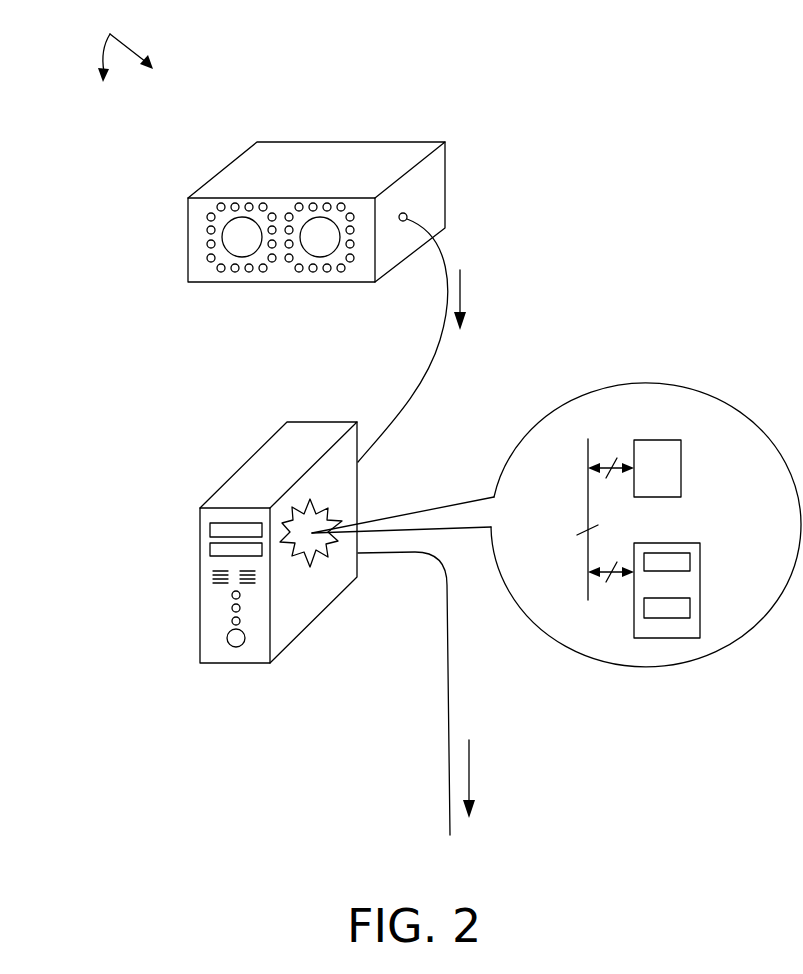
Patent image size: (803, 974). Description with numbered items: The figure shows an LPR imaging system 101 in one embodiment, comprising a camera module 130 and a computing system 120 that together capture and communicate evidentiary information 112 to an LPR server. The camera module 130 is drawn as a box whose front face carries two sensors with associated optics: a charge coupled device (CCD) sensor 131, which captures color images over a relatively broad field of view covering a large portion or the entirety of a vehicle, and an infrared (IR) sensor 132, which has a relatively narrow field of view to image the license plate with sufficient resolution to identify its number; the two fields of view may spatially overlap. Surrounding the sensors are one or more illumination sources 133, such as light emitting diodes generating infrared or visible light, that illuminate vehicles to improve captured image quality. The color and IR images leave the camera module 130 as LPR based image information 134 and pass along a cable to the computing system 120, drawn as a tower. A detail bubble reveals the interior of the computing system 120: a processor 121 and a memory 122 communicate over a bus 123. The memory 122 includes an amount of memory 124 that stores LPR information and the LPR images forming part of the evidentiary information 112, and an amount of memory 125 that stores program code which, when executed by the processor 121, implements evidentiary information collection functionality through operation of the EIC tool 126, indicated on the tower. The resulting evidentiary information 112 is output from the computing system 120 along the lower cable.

The LPR imaging system 101 is at (120, 48).
The camera module 130 is at (230, 164).
The charge coupled device (CCD) sensor 131 is at (235, 236).
The infrared (IR) sensor 132 is at (328, 233).
The illumination sources 133 is at (210, 260).
The LPR based image information 134 is at (460, 290).
The computing system 120 is at (200, 577).
The EIC tool 126 is at (337, 537).
The processor 121 is at (682, 468).
The memory 122 is at (634, 618).
The bus 123 is at (586, 497).
The amount of memory 124 is at (690, 561).
The amount of memory 125 is at (690, 607).
The evidentiary information 112 is at (469, 778).